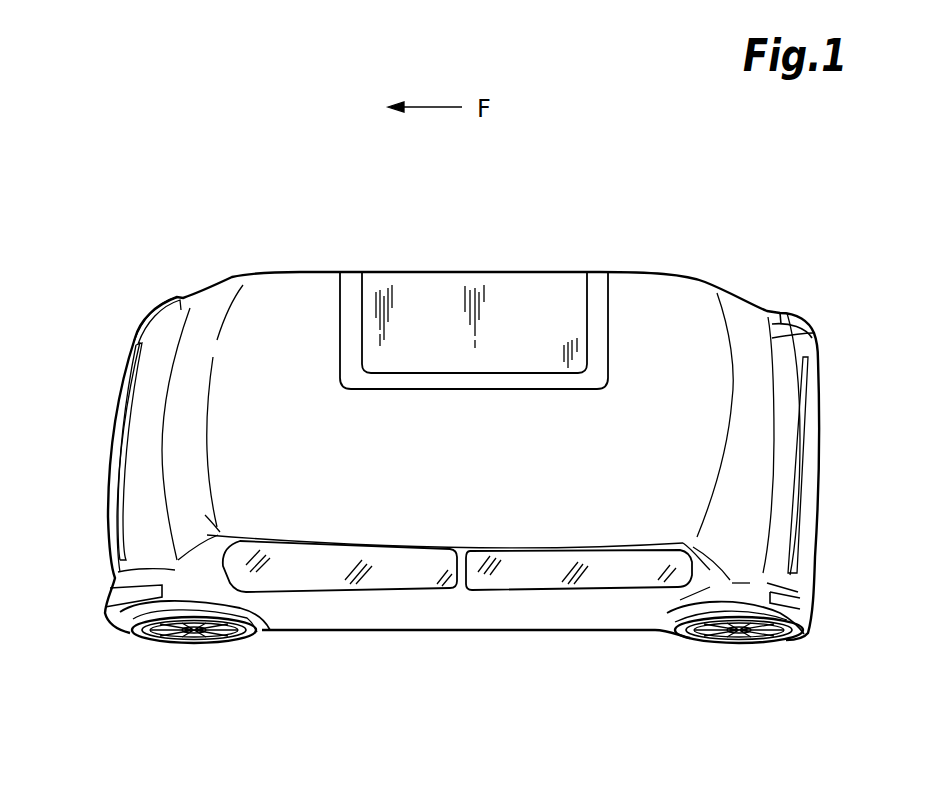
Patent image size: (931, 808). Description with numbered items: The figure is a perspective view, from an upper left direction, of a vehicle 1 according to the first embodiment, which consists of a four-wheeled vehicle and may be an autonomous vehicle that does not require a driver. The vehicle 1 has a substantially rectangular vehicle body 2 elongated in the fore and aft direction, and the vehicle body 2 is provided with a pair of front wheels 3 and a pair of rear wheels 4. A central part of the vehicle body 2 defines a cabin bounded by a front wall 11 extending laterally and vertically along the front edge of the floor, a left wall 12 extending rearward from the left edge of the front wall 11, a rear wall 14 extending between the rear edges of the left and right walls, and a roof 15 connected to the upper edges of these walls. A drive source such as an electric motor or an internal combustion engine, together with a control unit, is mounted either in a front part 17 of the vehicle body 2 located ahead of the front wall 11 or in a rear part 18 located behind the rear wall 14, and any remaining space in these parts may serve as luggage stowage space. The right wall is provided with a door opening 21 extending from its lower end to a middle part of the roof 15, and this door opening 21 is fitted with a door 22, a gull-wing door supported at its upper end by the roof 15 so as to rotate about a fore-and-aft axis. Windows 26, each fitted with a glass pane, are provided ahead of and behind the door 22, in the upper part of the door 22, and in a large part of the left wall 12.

The vehicle 1 is at (651, 193).
The vehicle body 2 is at (688, 268).
The front wheels 3 is at (157, 638).
The rear wheels 4 is at (772, 640).
The front wall 11 is at (183, 400).
The left wall 12 is at (492, 605).
The rear wall 14 is at (757, 442).
The roof 15 is at (285, 320).
The front part 17 is at (137, 450).
The rear part 18 is at (787, 502).
The door opening 21 is at (347, 290).
The door 22 is at (598, 288).
The windows 26 is at (513, 290).